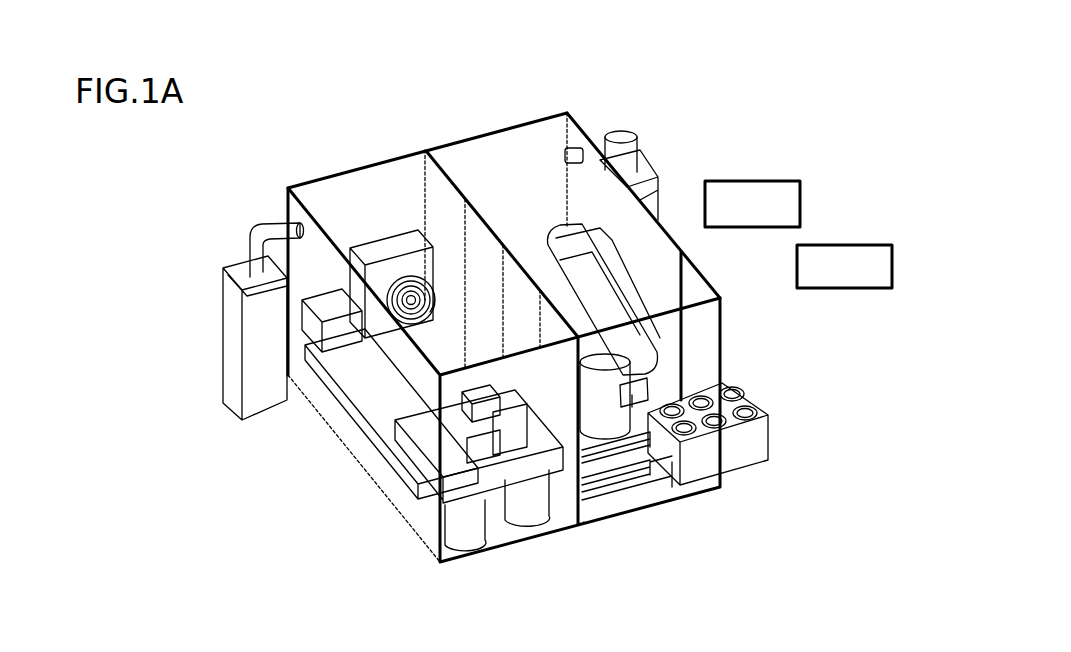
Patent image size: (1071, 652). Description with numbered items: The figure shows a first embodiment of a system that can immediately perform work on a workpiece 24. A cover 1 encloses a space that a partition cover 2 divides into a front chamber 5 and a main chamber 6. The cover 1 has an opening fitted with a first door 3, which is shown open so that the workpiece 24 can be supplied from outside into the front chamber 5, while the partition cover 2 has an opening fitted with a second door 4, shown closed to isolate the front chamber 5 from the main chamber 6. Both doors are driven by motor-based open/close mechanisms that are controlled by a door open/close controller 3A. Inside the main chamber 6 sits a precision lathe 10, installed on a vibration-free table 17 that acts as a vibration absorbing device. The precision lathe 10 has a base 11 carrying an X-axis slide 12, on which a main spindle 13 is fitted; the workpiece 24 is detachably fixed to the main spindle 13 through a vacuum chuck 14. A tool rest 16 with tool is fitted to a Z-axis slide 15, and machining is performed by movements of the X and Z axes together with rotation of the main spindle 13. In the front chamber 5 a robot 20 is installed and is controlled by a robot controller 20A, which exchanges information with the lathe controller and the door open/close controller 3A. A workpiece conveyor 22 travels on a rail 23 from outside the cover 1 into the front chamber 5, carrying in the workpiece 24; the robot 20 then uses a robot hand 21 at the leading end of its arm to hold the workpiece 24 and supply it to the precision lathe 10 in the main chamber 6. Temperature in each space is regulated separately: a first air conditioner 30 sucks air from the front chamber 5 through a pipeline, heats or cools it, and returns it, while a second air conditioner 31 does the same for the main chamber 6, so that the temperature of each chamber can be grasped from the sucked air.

The cover 1 is at (288, 188).
The partition cover 2 is at (563, 413).
The first door 3 is at (700, 324).
The door open/close controller 3A is at (704, 312).
The second door 4 is at (483, 253).
The front chamber 5 is at (540, 150).
The main chamber 6 is at (342, 198).
The precision lathe 10 is at (370, 227).
The base 11 is at (393, 427).
The X-axis slide 12 is at (348, 287).
The main spindle 13 is at (402, 268).
The vacuum chuck 14 is at (413, 310).
The Z-axis slide 15 is at (493, 413).
The tool rest with tool 16 is at (480, 390).
The vibration-free table 17 is at (477, 530).
The robot 20 is at (572, 228).
The robot controller 20A is at (603, 265).
The robot hand 21 is at (648, 400).
The workpiece conveyor 22 is at (735, 462).
The rail 23 is at (642, 480).
The workpiece 24 is at (730, 388).
The first air conditioner 30 is at (648, 172).
The second air conditioner 31 is at (235, 272).